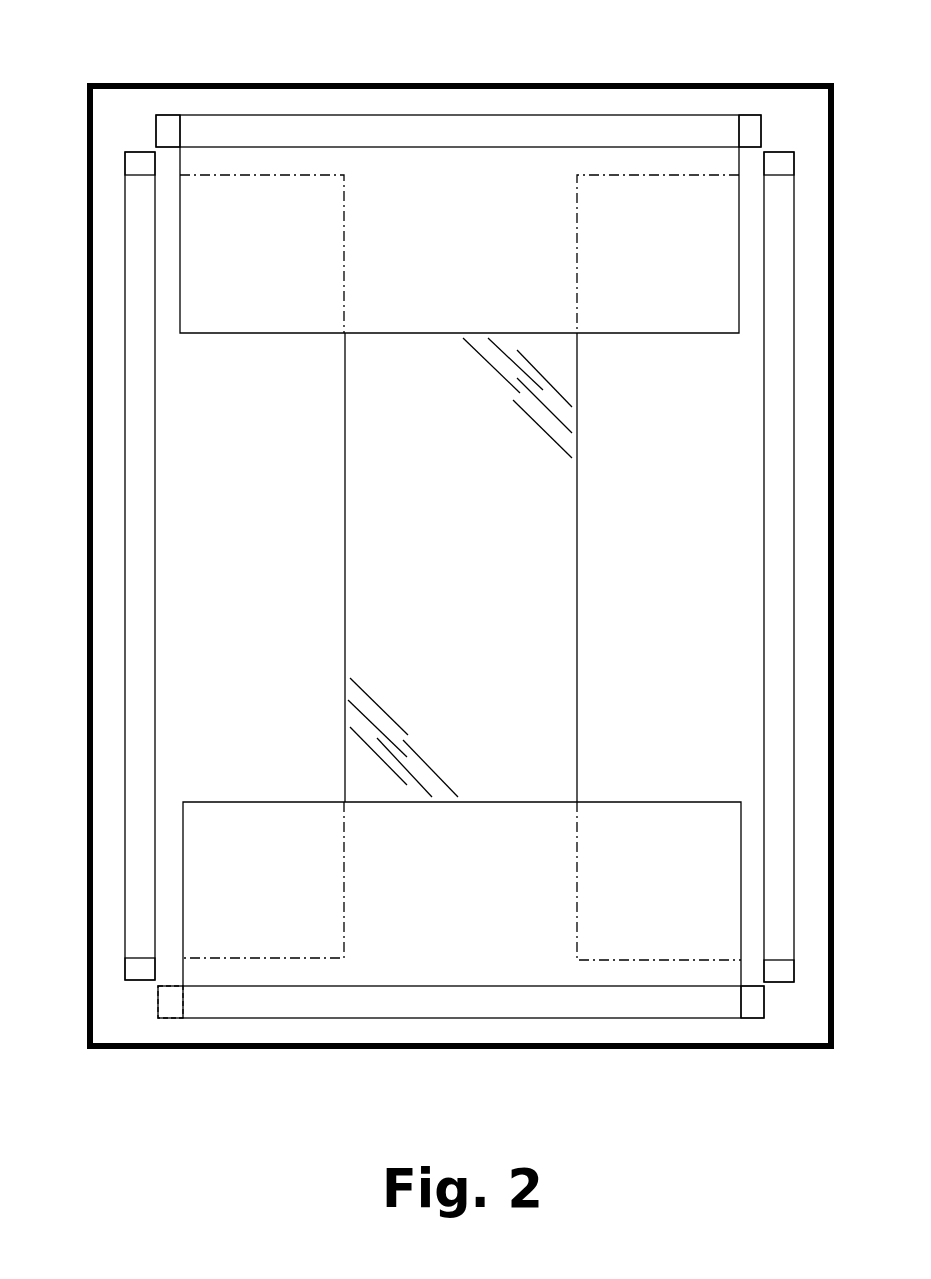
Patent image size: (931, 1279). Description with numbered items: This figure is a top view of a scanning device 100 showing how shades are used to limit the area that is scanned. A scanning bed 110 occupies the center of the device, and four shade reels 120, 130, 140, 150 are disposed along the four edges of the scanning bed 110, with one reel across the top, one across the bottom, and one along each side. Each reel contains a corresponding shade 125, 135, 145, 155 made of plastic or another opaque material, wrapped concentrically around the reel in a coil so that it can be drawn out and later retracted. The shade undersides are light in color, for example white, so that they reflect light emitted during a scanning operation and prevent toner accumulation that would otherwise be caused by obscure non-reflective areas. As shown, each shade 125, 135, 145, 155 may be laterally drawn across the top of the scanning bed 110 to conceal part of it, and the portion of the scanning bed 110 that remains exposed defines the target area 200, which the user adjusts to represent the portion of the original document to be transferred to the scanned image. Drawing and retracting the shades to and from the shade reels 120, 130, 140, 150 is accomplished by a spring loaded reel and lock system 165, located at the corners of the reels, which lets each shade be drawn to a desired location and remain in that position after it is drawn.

The scanning device 100 is at (128, 1009).
The scanning bed 110 is at (482, 563).
The shade reel 120 is at (605, 128).
The shade 125 is at (440, 227).
The shade reel 130 is at (268, 1003).
The shade 135 is at (423, 917).
The shade reel 140 is at (138, 295).
The shade 145 is at (212, 423).
The shade reel 150 is at (783, 892).
The shade 155 is at (673, 717).
The spring loaded reel and lock system 165 is at (142, 163).
The target area 200 is at (430, 701).